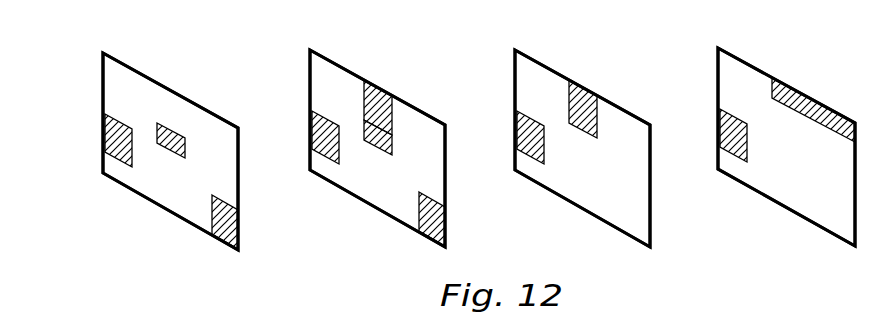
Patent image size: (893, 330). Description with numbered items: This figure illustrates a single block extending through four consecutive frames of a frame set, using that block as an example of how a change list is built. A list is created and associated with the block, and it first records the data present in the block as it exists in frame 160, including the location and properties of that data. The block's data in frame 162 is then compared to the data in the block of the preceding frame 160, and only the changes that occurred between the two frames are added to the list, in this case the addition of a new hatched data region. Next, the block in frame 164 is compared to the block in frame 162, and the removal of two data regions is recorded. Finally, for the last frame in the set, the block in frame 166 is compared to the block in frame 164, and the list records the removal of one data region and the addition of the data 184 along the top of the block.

The frame 160 is at (148, 217).
The frame 162 is at (353, 209).
The frame 164 is at (558, 208).
The frame 166 is at (769, 209).
The data 184 is at (822, 120).